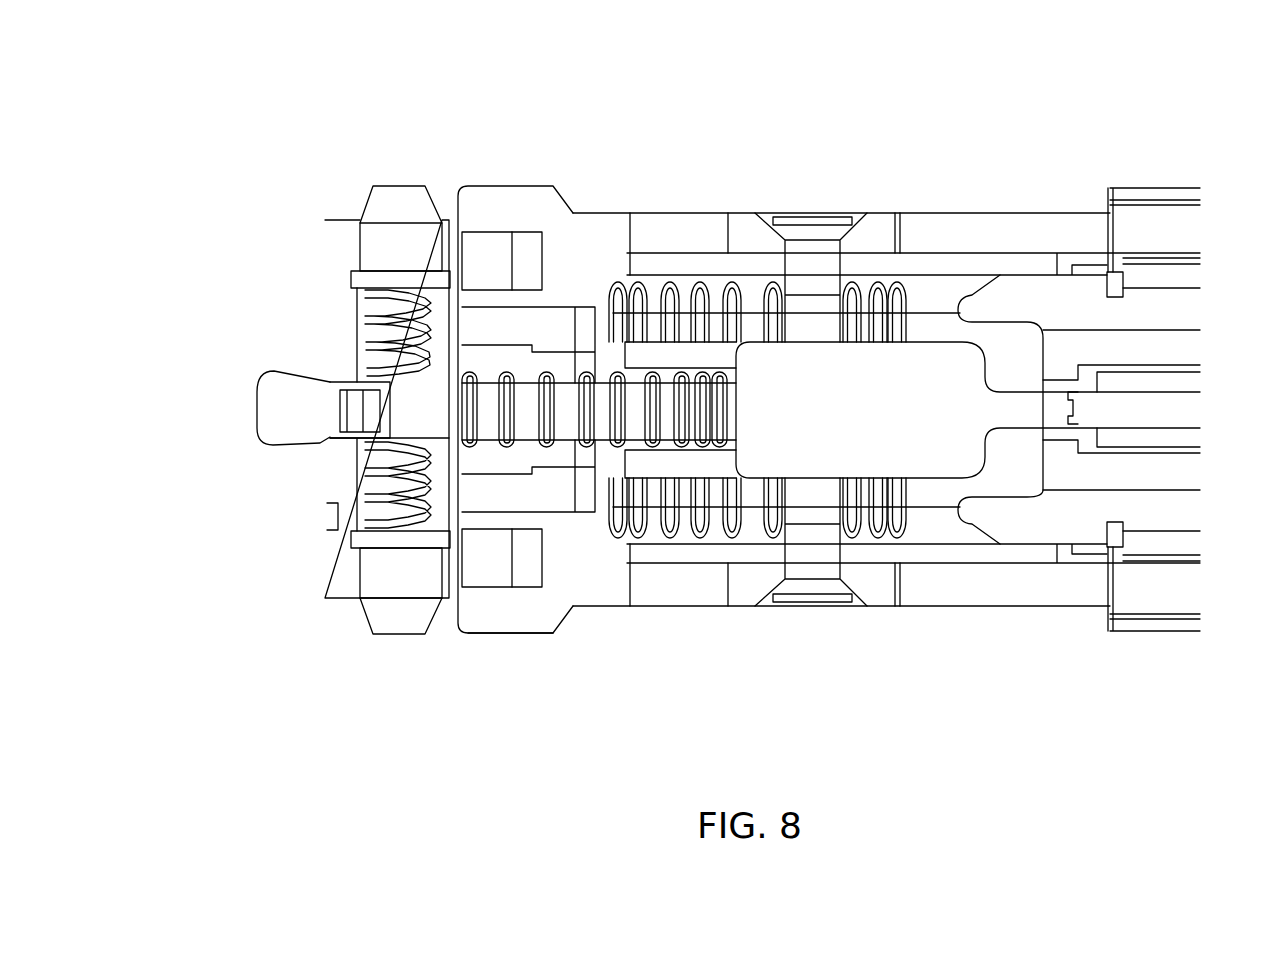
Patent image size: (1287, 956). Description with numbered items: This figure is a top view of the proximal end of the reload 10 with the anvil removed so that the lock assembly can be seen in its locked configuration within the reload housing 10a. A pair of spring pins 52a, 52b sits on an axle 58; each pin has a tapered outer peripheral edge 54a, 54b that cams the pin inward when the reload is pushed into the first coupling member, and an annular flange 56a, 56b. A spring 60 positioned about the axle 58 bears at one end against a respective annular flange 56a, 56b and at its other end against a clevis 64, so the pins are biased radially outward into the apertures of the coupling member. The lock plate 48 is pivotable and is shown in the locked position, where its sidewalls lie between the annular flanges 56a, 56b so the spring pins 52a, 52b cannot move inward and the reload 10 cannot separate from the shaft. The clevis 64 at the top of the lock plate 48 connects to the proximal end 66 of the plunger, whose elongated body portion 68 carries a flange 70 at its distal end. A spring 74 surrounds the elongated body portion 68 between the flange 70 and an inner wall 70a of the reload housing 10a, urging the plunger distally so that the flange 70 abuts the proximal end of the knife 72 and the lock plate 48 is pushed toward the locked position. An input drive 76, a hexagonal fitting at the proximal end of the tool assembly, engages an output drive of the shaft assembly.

The reload 10 is at (1068, 88).
The reload housing 10a is at (480, 640).
The lock plate 48 is at (325, 313).
The spring pin 52a is at (383, 257).
The spring pin 52b is at (415, 572).
The tapered outer peripheral edge 54a is at (383, 213).
The tapered outer peripheral edge 54b is at (415, 617).
The annular flange 56a is at (370, 282).
The annular flange 56b is at (378, 538).
The axle 58 is at (405, 355).
The spring 60 is at (412, 373).
The clevis 64 is at (348, 385).
The proximal end of the plunger 66 is at (430, 413).
The elongated body portion 68 is at (562, 418).
The flange 70 is at (728, 300).
The inner wall 70a is at (460, 493).
The knife 72 is at (817, 367).
The spring 74 is at (588, 368).
The input drive 76 is at (282, 450).